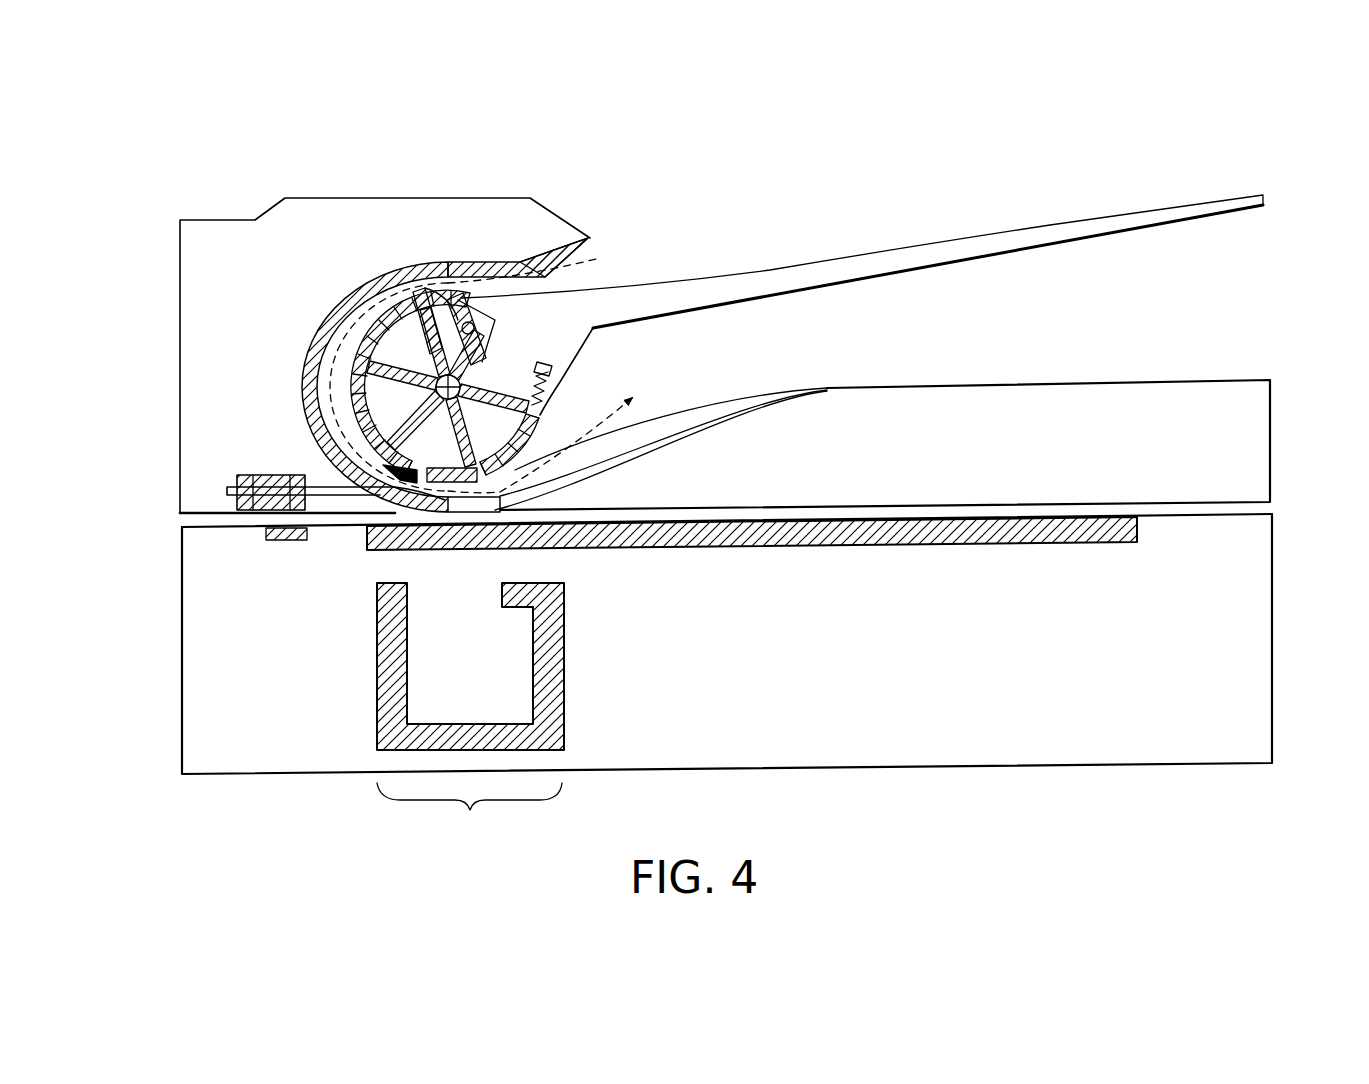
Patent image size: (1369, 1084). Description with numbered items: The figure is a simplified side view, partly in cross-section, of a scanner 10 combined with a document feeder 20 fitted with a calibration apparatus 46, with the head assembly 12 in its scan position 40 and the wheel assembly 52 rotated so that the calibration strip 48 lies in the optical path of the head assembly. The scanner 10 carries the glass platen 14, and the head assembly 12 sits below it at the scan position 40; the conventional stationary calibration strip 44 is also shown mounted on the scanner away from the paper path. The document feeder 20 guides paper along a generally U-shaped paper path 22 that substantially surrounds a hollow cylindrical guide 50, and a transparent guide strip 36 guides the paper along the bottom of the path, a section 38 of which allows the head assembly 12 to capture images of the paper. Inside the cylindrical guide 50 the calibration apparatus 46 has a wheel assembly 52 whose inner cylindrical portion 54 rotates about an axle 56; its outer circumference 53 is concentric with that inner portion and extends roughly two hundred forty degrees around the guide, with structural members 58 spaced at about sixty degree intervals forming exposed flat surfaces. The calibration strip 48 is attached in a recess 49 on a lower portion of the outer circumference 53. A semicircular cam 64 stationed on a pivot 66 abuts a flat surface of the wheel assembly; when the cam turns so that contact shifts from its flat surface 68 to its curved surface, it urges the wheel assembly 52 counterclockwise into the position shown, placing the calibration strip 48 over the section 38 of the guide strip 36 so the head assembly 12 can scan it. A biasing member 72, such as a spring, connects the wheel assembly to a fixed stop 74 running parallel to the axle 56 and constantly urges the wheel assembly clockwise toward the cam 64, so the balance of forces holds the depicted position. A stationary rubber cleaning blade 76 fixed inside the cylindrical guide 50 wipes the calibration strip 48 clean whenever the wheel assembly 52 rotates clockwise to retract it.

The scanner 10 is at (996, 800).
The head assembly 12 is at (567, 648).
The glass platen 14 is at (1090, 546).
The document feeder 20 is at (204, 196).
The paper path 22 is at (603, 258).
The guide strip 36 is at (318, 478).
The section of the guide strip 38 is at (520, 490).
The scan position 40 is at (469, 828).
The stationary calibration strip 44 is at (290, 541).
The calibration apparatus 46 is at (358, 336).
The calibration strip 48 is at (540, 439).
The recess 49 is at (650, 418).
The cylindrical guide 50 is at (345, 350).
The wheel assembly 52 is at (322, 372).
The outer circumference 53 is at (355, 360).
The inner cylindrical portion 54 is at (585, 240).
The axle 56 is at (403, 292).
The structural members 58 is at (370, 400).
The cam 64 is at (462, 312).
The pivot 66 is at (479, 342).
The flat surface of the cam 68 is at (490, 365).
The biasing member 72 is at (552, 410).
The fixed stop 74 is at (548, 366).
The cleaning blade 76 is at (325, 447).